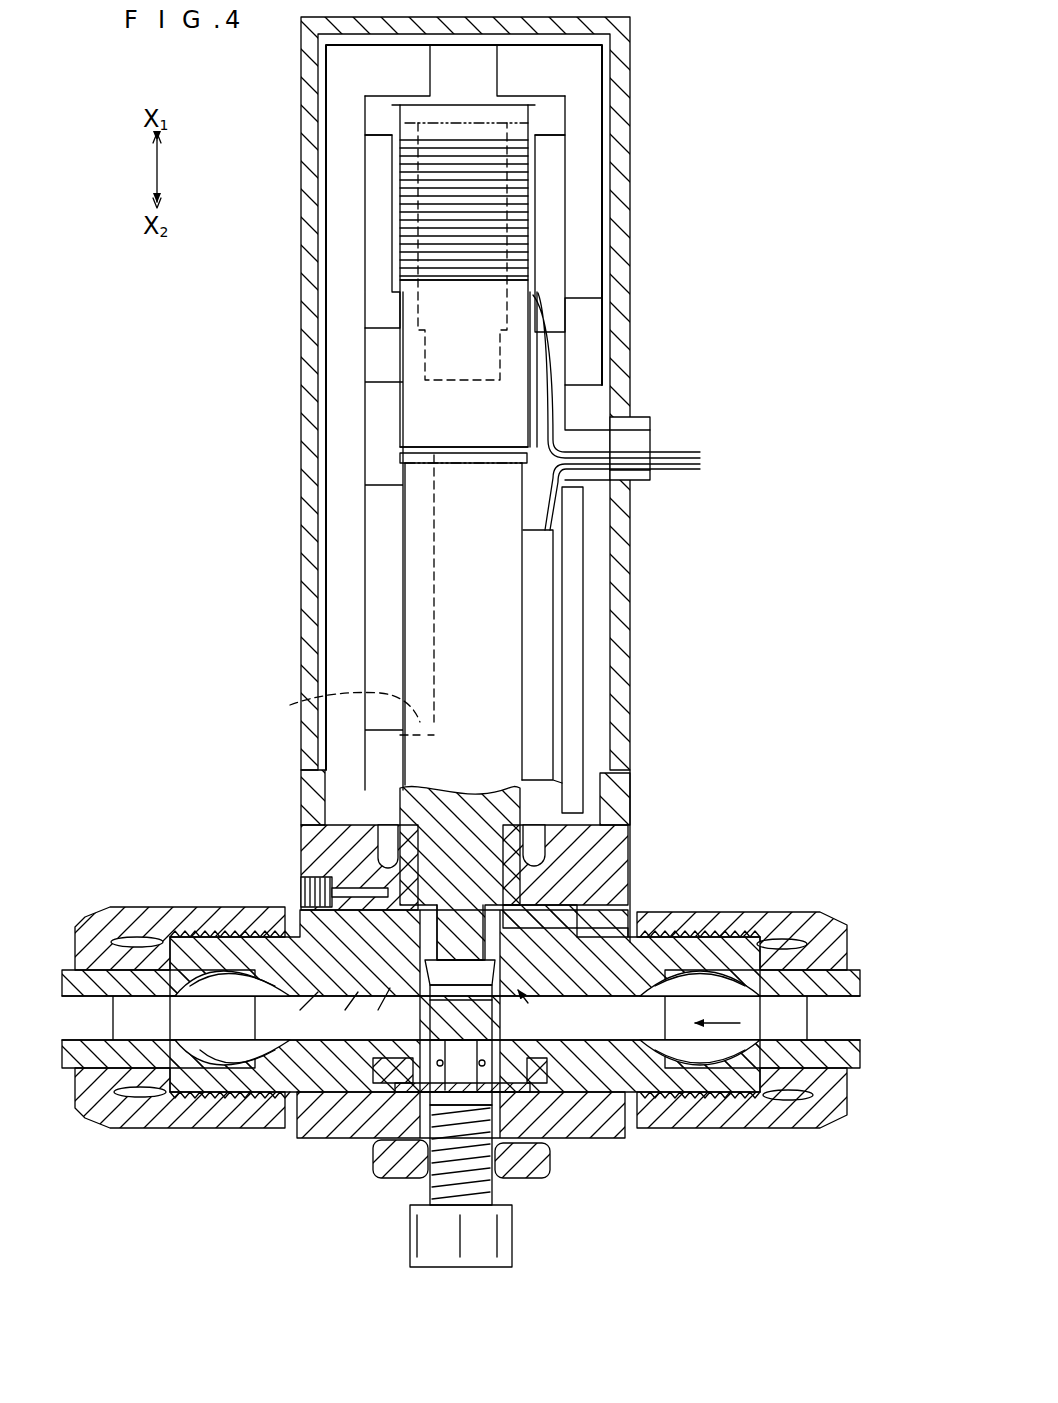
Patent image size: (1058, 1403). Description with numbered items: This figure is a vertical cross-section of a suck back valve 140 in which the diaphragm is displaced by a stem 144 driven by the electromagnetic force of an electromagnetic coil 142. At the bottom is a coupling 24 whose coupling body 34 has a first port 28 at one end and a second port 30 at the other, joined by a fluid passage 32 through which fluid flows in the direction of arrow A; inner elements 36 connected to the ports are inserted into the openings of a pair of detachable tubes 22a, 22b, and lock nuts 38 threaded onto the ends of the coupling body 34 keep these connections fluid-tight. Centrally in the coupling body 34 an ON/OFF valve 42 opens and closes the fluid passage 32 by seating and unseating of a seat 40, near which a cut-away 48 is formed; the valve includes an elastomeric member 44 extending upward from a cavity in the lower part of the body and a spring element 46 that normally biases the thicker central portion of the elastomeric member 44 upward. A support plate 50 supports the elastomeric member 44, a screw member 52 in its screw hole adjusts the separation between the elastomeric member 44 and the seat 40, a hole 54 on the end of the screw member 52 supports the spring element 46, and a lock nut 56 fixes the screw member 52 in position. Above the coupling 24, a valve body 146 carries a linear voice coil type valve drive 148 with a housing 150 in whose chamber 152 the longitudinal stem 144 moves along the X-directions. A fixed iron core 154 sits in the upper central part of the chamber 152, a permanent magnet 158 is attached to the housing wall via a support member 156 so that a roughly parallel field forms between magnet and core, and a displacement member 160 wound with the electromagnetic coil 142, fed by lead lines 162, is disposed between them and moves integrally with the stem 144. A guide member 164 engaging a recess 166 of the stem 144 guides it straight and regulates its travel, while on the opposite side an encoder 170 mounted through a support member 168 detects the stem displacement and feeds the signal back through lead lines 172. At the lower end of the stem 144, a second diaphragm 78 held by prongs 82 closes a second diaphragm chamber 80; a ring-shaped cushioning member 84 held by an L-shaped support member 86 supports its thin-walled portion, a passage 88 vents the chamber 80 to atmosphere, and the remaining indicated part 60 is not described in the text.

The suck back valve 140 is at (497, 484).
The electromagnetic coil 142 is at (520, 220).
The stem 144 is at (487, 680).
The valve body 146 is at (575, 840).
The valve drive 148 is at (548, 157).
The housing 150 is at (305, 258).
The chamber 152 is at (555, 315).
The fixed iron core 154 is at (485, 80).
The support member 156 is at (355, 352).
The permanent magnet 158 is at (375, 190).
The displacement member 160 is at (478, 360).
The lead lines 162 is at (555, 405).
The guide member 164 is at (388, 540).
The recess 166 is at (290, 705).
The support member 168 is at (595, 565).
The encoder 170 is at (540, 620).
The lead lines 172 is at (555, 528).
The pin 60 is at (557, 832).
The second diaphragm chamber 80 is at (572, 907).
The support member 86 is at (380, 918).
The passage 88 is at (335, 852).
The cut-away 48 is at (623, 913).
The prongs 82 is at (292, 1015).
The cushioning member 84 is at (335, 1015).
The second diaphragm 78 is at (371, 1013).
The seat 40 is at (428, 990).
The ON/OFF valve 42 is at (500, 1028).
The flow direction A is at (528, 1008).
The tube 22a is at (97, 1130).
The tube 22b is at (823, 1130).
The coupling 24 is at (231, 1135).
The first port 28 is at (207, 1125).
The second port 30 is at (720, 1125).
The fluid passage 32 is at (295, 1135).
The coupling body 34 is at (662, 1125).
The inner elements 36 is at (252, 1130).
The lock nuts 38 is at (170, 1125).
The elastomeric member 44 is at (570, 1100).
The spring element 46 is at (510, 1180).
The support plate 50 is at (340, 1140).
The screw member 52 is at (505, 1242).
The hole 54 is at (425, 1085).
The lock nut 56 is at (545, 1165).